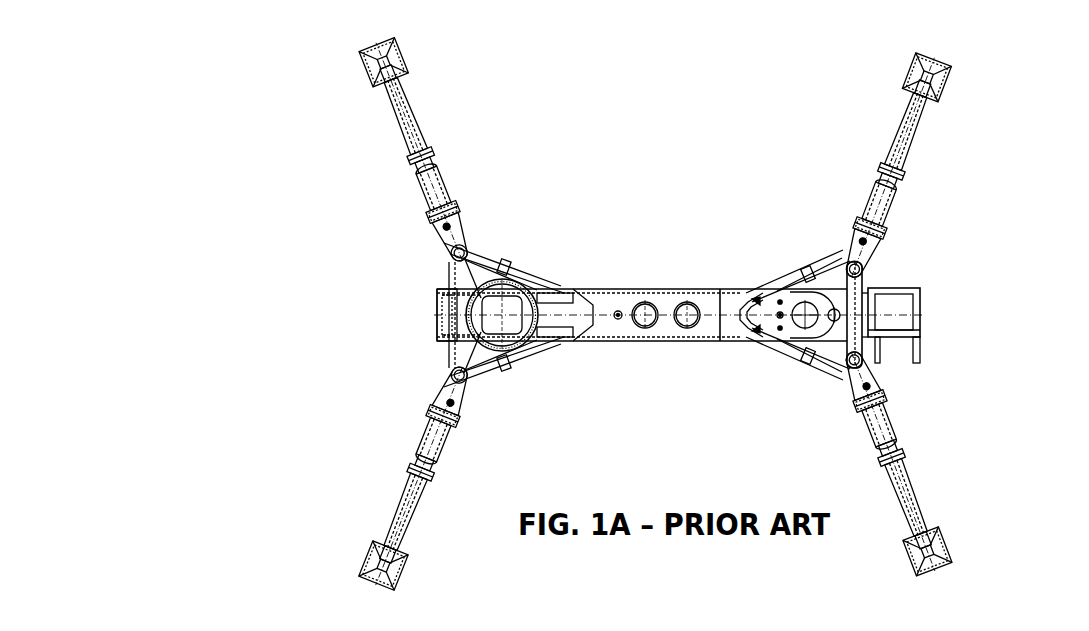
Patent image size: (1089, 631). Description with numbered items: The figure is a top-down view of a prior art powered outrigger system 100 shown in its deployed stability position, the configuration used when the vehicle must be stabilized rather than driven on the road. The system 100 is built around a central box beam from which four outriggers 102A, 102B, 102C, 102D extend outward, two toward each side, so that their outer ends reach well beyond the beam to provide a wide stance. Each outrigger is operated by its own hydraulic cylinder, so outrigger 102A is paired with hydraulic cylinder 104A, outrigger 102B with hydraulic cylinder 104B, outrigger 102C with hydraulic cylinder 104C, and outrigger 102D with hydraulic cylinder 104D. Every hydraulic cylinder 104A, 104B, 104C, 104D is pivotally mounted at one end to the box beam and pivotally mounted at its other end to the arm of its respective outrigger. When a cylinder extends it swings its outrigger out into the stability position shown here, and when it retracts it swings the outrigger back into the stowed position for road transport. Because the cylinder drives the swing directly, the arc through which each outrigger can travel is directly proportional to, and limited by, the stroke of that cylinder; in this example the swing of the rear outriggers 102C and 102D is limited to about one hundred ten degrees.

The powered outrigger system 100 is at (253, 65).
The outrigger 102A is at (939, 192).
The outrigger 102B is at (913, 437).
The outrigger 102C is at (473, 452).
The outrigger 102D is at (461, 137).
The hydraulic cylinder 104A is at (867, 211).
The hydraulic cylinder 104B is at (885, 427).
The hydraulic cylinder 104C is at (437, 428).
The hydraulic cylinder 104D is at (437, 198).